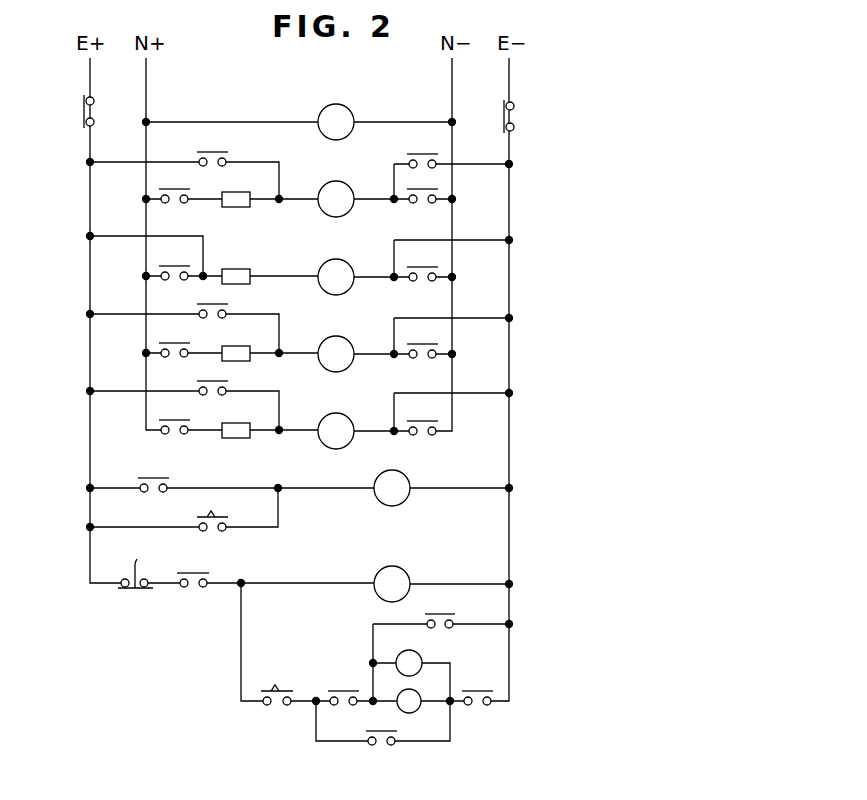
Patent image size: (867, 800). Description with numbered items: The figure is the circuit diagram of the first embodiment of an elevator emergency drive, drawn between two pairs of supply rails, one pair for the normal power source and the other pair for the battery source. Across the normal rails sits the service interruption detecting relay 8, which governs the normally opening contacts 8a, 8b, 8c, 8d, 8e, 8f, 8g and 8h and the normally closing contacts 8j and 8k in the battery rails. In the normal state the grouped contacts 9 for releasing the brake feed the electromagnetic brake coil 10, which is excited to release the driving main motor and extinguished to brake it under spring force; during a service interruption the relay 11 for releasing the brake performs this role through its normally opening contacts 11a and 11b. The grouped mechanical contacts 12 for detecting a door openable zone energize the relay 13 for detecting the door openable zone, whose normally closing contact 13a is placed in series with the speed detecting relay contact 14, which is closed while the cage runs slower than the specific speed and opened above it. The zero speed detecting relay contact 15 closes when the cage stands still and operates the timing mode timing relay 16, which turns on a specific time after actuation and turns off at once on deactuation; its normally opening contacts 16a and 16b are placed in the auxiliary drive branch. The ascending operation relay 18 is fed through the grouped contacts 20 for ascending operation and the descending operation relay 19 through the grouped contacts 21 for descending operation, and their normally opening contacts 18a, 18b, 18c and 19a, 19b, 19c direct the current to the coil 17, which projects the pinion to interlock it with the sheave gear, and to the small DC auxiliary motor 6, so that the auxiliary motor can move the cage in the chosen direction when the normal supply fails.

The small DC auxiliary motor 6 is at (418, 692).
The service interruption detecting relay 8 is at (348, 110).
The normally opening contact 8a is at (165, 189).
The normally opening contact 8b is at (425, 189).
The normally opening contact 8c is at (165, 266).
The normally opening contact 8d is at (425, 267).
The normally opening contact 8e is at (165, 343).
The normally opening contact 8f is at (425, 344).
The normally opening contact 8g is at (165, 420).
The normally opening contact 8h is at (425, 421).
The normally closing contact 8j is at (84, 115).
The normally closing contact 8k is at (514, 116).
The grouped contacts for releasing a brake 9 is at (237, 192).
The electromagnetic brake coil 10 is at (341, 182).
The relay for releasing the brake in the service interruption 11 is at (404, 571).
The normally opening contact 11a is at (212, 152).
The normally opening contact 11b is at (424, 154).
The grouped mechanical contacts for detecting a door openable zone 12 is at (237, 269).
The relay for detecting the door openable zone 13 is at (340, 261).
The normally closing contact 13a is at (141, 566).
The speed detecting relay contact 14 is at (193, 573).
The zero speed detecting relay contact 15 is at (154, 478).
The timing mode timing relay 16 is at (404, 475).
The normally opening contact 16a is at (220, 517).
The normally opening contact 16b is at (274, 687).
The coil for projecting the pinion 17 is at (426, 644).
The ascending operation relay 18 is at (341, 338).
The normally opening contact 18a is at (212, 304).
The normally opening contact 18b is at (343, 691).
The normally opening contact 18c is at (478, 691).
The descending operation relay 19 is at (340, 416).
The normally opening contact 19a is at (212, 381).
The normally opening contact 19b is at (381, 731).
The normally opening contact 19c is at (444, 603).
The grouped contacts for ascending operation 20 is at (237, 346).
The grouped contacts for descending operation 21 is at (237, 423).